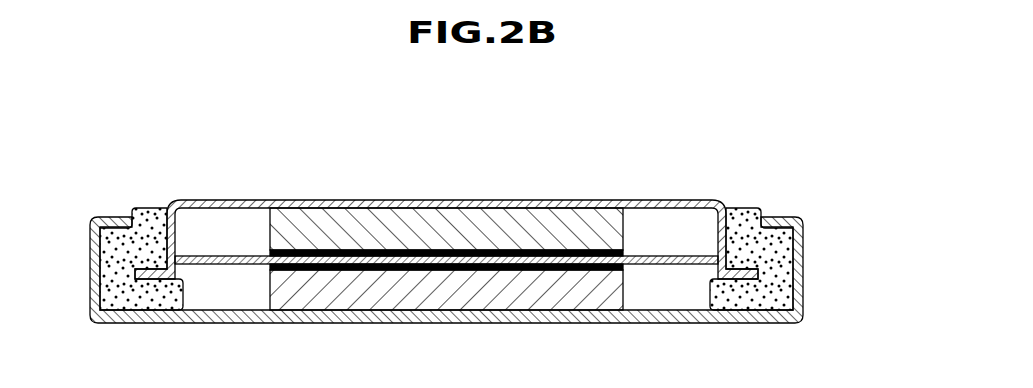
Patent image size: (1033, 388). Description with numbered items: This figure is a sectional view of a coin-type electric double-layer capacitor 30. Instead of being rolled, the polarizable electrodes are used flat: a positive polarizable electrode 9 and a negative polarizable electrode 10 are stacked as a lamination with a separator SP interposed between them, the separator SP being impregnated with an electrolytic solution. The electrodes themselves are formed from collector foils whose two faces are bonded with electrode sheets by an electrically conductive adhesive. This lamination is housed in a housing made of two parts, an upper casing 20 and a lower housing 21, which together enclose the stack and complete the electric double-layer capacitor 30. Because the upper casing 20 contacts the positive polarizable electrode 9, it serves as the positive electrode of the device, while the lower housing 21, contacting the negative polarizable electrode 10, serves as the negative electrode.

The electric double-layer capacitor 30 is at (531, 171).
The upper casing 20 is at (238, 200).
The lower housing 21 is at (240, 323).
The positive polarizable electrode 9 is at (453, 233).
The negative polarizable electrode 10 is at (460, 287).
The separator SP is at (663, 258).